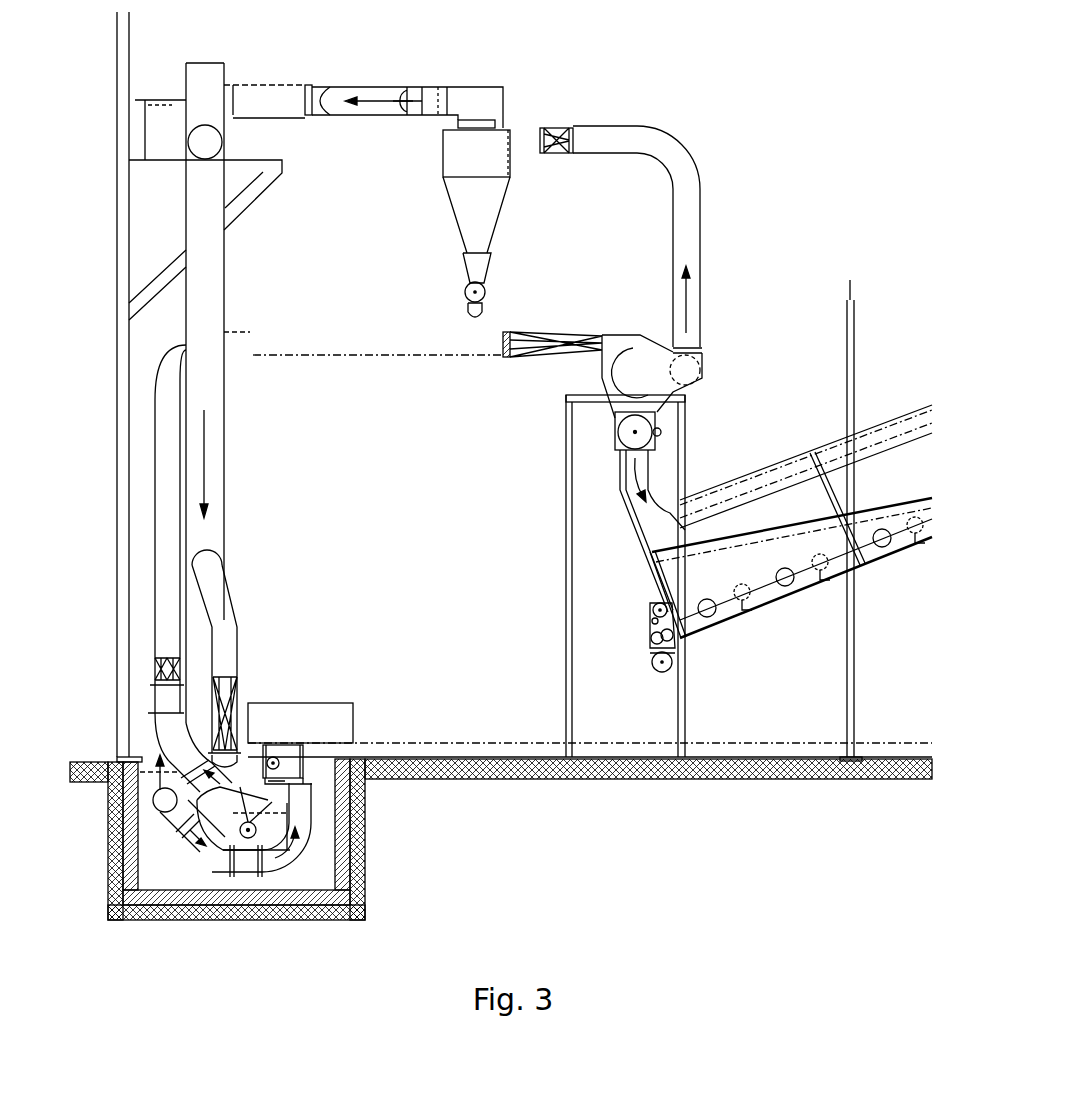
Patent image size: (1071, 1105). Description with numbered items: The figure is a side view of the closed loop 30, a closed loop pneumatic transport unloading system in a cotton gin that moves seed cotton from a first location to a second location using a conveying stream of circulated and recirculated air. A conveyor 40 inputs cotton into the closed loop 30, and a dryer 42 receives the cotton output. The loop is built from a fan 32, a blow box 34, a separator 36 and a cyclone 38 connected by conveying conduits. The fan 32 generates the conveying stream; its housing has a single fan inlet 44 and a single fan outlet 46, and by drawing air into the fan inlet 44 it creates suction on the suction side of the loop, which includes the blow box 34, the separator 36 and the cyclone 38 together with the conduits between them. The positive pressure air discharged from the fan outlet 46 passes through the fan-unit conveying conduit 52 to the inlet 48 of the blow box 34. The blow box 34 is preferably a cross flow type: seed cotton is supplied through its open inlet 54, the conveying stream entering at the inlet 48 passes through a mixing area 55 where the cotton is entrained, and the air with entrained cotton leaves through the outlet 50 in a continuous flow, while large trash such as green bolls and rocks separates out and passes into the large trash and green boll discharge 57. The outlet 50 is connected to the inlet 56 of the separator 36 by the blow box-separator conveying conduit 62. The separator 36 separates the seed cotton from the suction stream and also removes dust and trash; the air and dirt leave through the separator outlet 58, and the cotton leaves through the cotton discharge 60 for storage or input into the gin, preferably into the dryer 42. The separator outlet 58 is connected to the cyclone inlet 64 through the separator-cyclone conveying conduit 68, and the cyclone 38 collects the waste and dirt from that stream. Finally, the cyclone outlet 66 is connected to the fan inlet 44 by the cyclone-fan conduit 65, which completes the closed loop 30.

The closed loop 30 is at (88, 272).
The fan 32 is at (205, 100).
The blow box 34 is at (280, 875).
The separator 36 is at (657, 382).
The cyclone 38 is at (485, 208).
The conveyor 40 is at (445, 742).
The dryer 42 is at (655, 578).
The fan inlet 44 is at (247, 112).
The fan outlet 46 is at (210, 257).
The inlet 48 is at (300, 797).
The outlet 50 is at (240, 823).
The fan-unit conveying conduit 52 is at (224, 424).
The open inlet 54 is at (250, 767).
The mixing area 55 is at (271, 783).
The inlet 56 is at (548, 335).
The large trash and green boll discharge 57 is at (242, 837).
The separator outlet 58 is at (688, 368).
The cotton discharge 60 is at (657, 468).
The blow box-separator conveying conduit 62 is at (153, 558).
The cyclone inlet 64 is at (546, 128).
The cyclone-fan conduit 65 is at (355, 117).
The cyclone outlet 66 is at (432, 108).
The separator-cyclone conveying conduit 68 is at (703, 238).